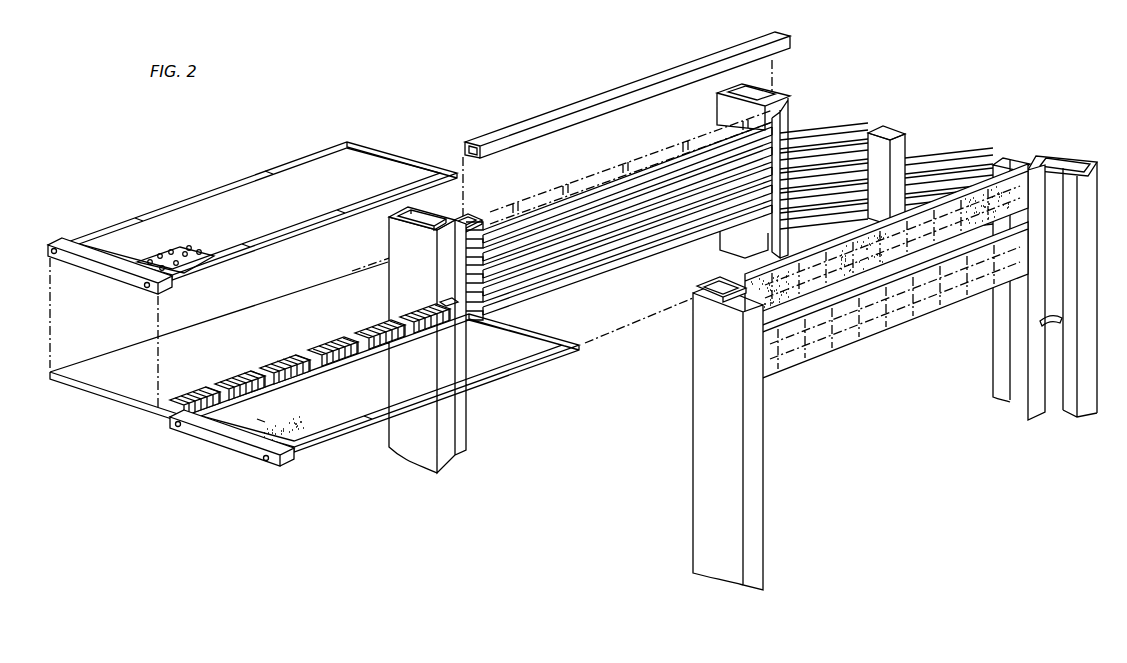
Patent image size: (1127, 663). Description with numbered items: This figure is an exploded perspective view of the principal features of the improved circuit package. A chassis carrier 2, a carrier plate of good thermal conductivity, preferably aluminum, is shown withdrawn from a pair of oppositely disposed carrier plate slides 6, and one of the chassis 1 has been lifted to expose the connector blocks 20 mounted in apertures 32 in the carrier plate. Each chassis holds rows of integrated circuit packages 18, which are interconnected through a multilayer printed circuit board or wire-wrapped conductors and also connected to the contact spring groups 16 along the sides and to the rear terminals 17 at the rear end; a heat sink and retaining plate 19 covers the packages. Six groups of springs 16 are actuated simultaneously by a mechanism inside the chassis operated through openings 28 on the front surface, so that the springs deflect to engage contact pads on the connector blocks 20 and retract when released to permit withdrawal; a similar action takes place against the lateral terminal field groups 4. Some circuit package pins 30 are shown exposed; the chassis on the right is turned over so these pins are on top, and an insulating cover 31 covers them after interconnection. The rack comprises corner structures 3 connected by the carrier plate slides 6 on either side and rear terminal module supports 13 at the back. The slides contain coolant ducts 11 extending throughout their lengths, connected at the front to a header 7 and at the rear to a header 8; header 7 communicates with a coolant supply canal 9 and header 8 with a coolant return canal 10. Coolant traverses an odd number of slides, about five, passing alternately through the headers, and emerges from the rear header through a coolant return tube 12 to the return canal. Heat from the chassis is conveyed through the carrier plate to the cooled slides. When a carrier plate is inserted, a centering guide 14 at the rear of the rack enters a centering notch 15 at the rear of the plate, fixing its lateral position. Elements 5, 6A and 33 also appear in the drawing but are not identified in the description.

The chassis 1 is at (98, 268).
The chassis carrier 2 is at (112, 389).
The corner structures 3 is at (757, 455).
The lateral terminal field groups 4 is at (858, 272).
The perforated area 5 is at (1018, 212).
The carrier plate slides 6 is at (548, 110).
The rail 6A is at (643, 157).
The header 7 is at (457, 218).
The header 8 is at (791, 104).
The coolant supply canal 9 is at (405, 229).
The coolant return canal 10 is at (781, 92).
The coolant ducts 11 is at (463, 148).
The coolant return tube 12 is at (1040, 326).
The rear terminal module supports 13 is at (823, 133).
The centering guide 14 is at (890, 136).
The centering notch 15 is at (440, 304).
The groups of springs 16 is at (217, 193).
The rear terminals 17 is at (377, 147).
The integrated circuit packages 18 is at (179, 245).
The heat sink and retaining plate 19 is at (265, 188).
The connector blocks 20 is at (290, 365).
The openings 28 is at (62, 240).
The circuit package pins 30 is at (277, 425).
The insulating cover 31 is at (480, 358).
The apertures 32 is at (220, 390).
The end section 33 is at (139, 260).